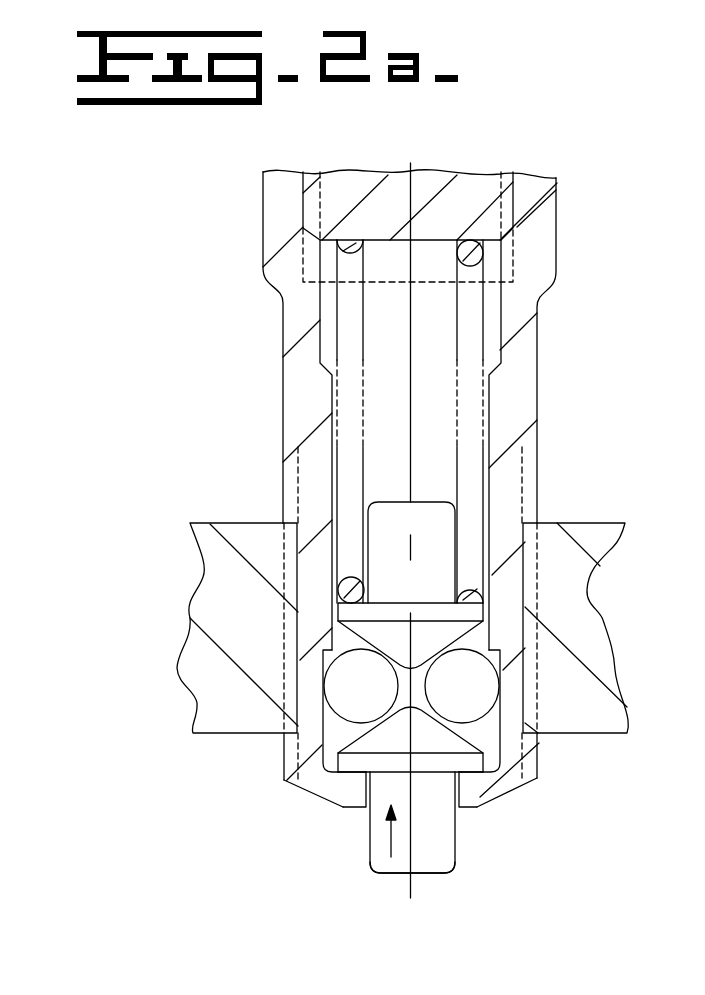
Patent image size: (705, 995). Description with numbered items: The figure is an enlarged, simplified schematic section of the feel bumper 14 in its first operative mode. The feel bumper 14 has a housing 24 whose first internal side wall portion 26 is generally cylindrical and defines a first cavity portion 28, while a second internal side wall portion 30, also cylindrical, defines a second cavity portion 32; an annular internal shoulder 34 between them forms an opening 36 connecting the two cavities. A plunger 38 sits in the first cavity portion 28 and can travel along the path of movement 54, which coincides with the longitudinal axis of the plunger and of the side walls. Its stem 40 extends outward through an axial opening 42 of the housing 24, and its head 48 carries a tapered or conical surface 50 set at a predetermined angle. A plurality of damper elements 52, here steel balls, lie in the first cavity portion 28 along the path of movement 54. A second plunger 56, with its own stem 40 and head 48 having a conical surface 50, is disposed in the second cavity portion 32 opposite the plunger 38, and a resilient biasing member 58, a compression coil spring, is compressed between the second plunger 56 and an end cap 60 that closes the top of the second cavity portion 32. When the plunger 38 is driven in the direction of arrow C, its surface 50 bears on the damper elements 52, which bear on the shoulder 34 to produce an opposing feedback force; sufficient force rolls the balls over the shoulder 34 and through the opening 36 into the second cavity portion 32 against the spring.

The feel bumper 14 is at (632, 267).
The housing 24 is at (547, 354).
The first internal side wall portion 26 is at (480, 752).
The first cavity portion 28 is at (332, 767).
The second internal side wall portion 30 is at (490, 528).
The second cavity portion 32 is at (470, 580).
The annular internal shoulder 34 is at (427, 697).
The opening 36 is at (490, 723).
The plunger 38 is at (457, 870).
The stem 40 is at (407, 502).
The axial opening 42 is at (458, 792).
The head 48 is at (338, 610).
The tapered or conical surface 50 is at (380, 650).
The damper elements 52 is at (385, 649).
The path of movement 54 is at (411, 882).
The second plunger 56 is at (461, 507).
The resilient biasing member 58 is at (485, 305).
The end cap 60 is at (513, 195).
The arrow C is at (390, 833).